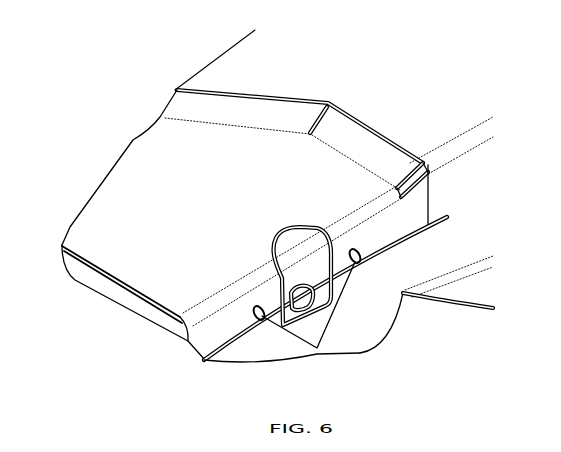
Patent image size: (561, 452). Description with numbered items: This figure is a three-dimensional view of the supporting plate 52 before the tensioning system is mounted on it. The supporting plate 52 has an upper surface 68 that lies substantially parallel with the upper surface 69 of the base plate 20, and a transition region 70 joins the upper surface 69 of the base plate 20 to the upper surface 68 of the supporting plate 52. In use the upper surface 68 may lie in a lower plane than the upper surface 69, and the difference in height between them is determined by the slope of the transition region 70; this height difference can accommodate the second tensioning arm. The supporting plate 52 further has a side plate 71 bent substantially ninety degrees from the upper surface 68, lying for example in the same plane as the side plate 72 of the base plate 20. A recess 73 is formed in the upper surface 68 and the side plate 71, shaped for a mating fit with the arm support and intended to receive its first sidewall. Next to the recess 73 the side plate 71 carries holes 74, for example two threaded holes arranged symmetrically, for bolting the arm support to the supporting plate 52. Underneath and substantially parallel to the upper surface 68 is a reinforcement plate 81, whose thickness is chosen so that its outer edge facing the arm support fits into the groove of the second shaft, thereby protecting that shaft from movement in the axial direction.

The base plate 20 is at (458, 93).
The supporting plate 52 is at (107, 137).
The upper surface 68 is at (98, 220).
The upper surface 69 is at (248, 70).
The transition region 70 is at (175, 108).
The side plate 71 is at (207, 337).
The side plate 72 is at (360, 326).
The recess 73 is at (298, 225).
The holes 74 is at (325, 301).
The reinforcement plate 81 is at (312, 277).